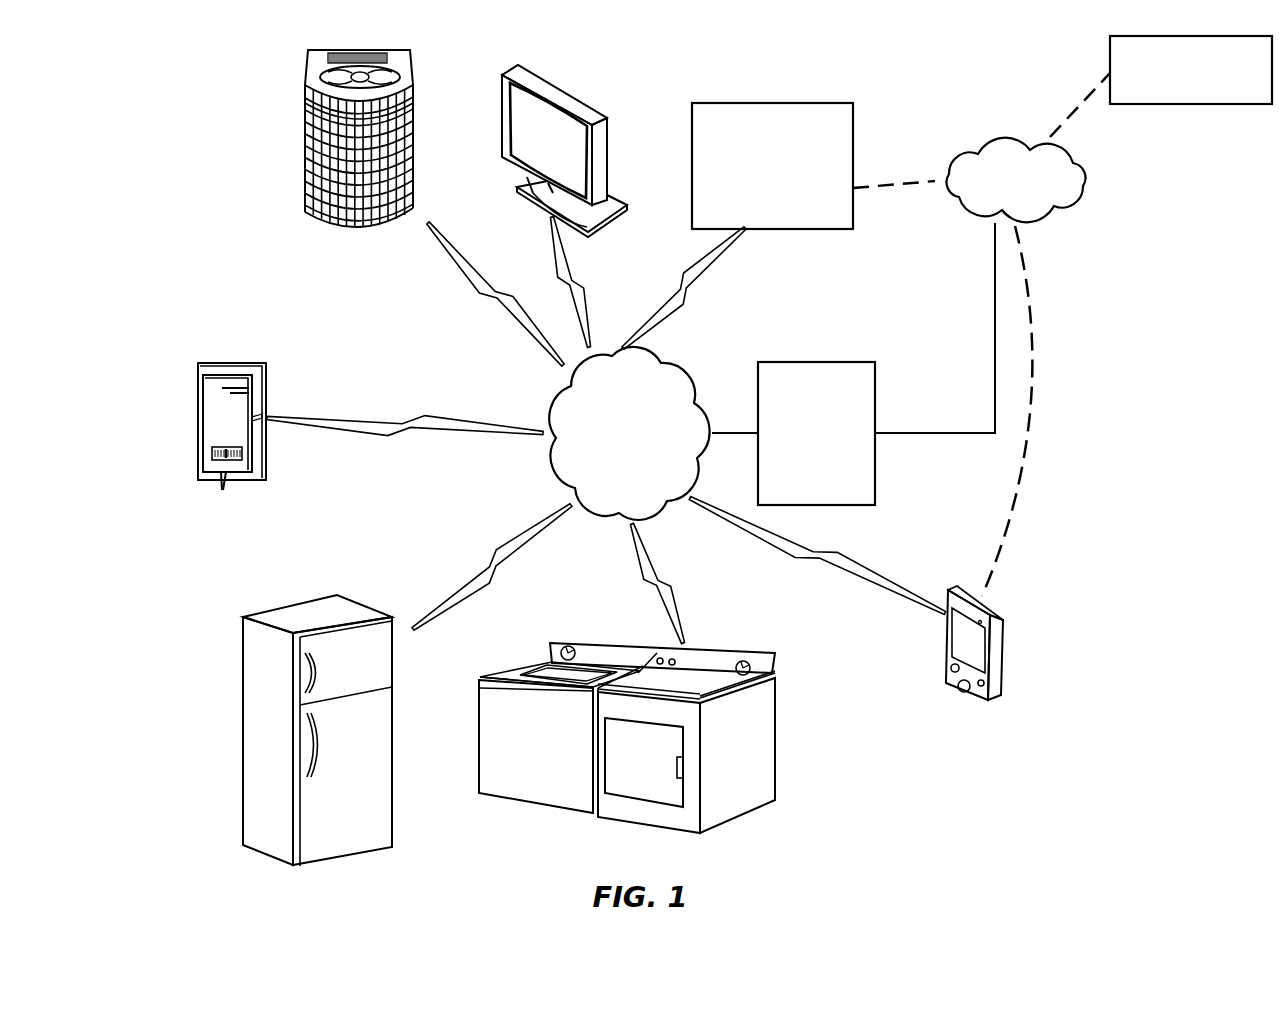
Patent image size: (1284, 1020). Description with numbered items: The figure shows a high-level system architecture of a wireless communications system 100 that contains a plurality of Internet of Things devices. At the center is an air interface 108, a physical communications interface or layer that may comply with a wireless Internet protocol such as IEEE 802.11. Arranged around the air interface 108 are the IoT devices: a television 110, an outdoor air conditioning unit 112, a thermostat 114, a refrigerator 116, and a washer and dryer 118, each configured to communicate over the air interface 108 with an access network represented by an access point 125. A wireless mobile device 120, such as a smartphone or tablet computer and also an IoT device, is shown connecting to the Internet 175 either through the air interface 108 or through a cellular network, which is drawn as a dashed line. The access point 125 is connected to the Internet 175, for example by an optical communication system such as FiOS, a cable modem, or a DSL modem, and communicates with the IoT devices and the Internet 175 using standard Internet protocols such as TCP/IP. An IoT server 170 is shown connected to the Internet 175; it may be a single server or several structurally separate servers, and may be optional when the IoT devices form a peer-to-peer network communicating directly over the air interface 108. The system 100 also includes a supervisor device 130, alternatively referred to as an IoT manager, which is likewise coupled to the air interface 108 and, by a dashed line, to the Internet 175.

The wireless communications system 100 is at (143, 137).
The air interface 108 is at (688, 349).
The television 110 is at (558, 82).
The outdoor air conditioning unit 112 is at (411, 54).
The thermostat 114 is at (245, 362).
The refrigerator 116 is at (270, 610).
The washer and dryer 118 is at (737, 652).
The wireless mobile device 120 is at (997, 605).
The access point 125 is at (850, 362).
The supervisor device 130 is at (817, 103).
The IoT server 170 is at (1200, 104).
The Internet 175 is at (1050, 221).